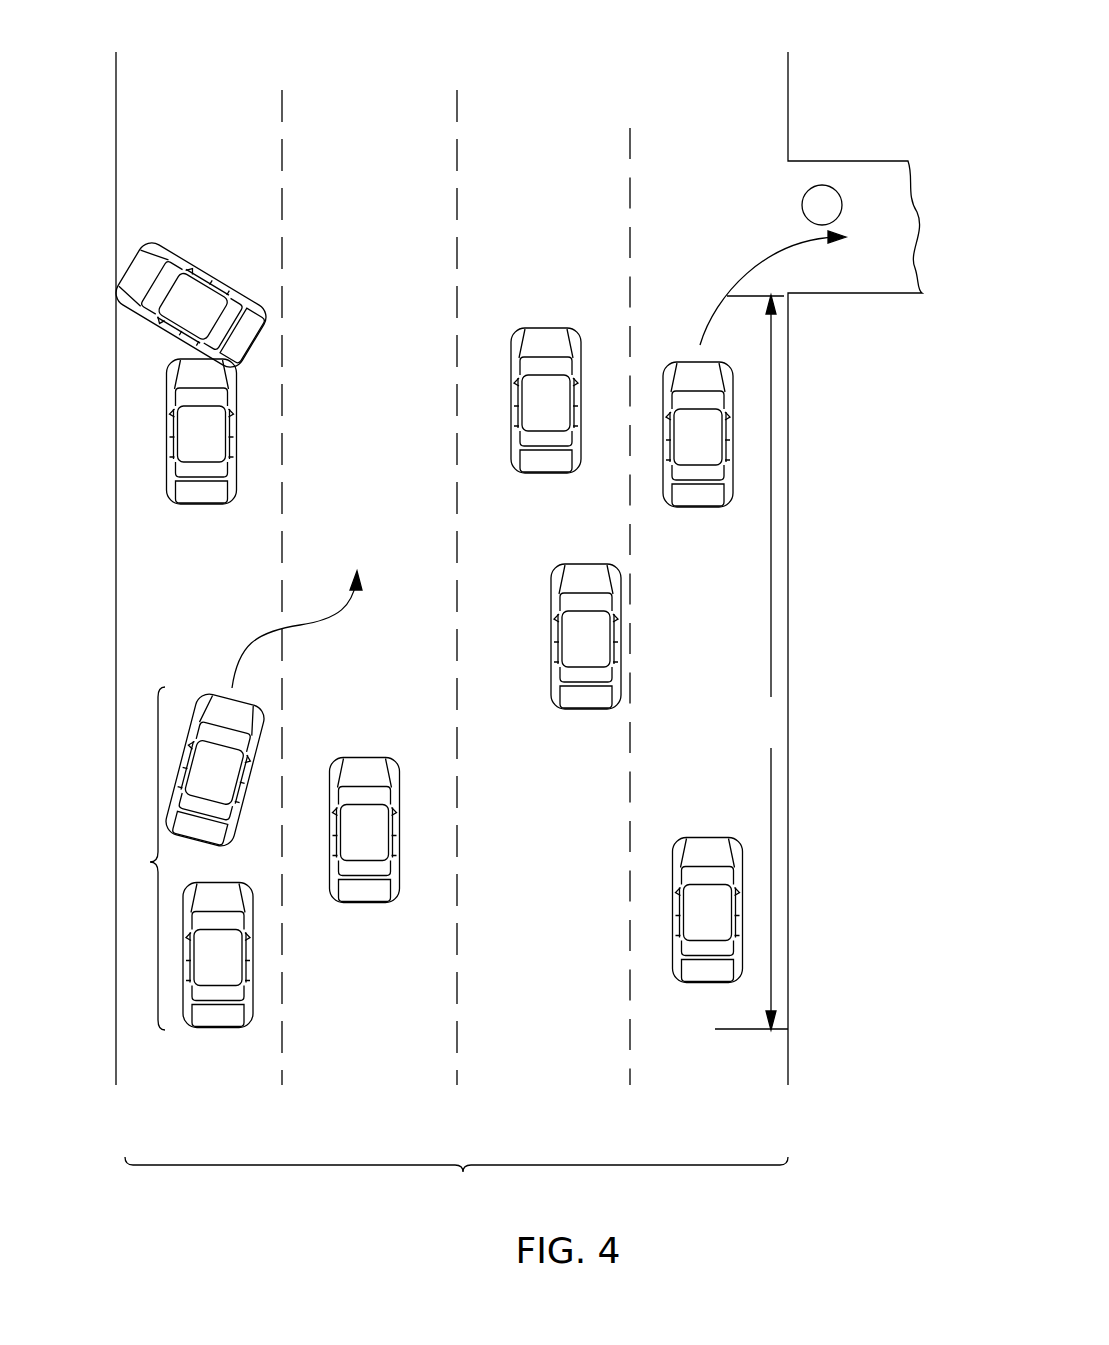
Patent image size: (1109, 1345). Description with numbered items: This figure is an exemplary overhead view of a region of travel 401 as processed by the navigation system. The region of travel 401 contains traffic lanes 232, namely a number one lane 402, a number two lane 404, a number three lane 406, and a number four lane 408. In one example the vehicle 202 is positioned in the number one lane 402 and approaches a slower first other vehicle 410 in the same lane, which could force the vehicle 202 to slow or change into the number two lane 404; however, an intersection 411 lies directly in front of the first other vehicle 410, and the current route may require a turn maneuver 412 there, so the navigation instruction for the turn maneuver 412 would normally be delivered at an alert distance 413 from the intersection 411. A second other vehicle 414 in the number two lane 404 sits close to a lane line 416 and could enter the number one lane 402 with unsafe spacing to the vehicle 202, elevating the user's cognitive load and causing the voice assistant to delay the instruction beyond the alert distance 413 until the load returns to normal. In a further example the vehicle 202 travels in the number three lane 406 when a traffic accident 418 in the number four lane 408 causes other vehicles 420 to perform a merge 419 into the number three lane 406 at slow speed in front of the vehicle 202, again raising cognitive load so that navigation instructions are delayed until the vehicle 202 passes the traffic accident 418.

The region of travel 401 is at (272, 68).
The vehicle 202 is at (367, 845).
The traffic lanes 232 is at (463, 1172).
The number 1 lane 402 is at (715, 1058).
The number 2 lane 404 is at (549, 1065).
The number 3 lane 406 is at (365, 1065).
The number 4 lane 408 is at (198, 1065).
The first other vehicle 410 is at (697, 457).
The intersection 411 is at (826, 204).
The turn maneuver 412 is at (738, 292).
The alert distance 413 is at (751, 662).
The second other vehicle 414 is at (586, 658).
The lane line 416 is at (632, 727).
The traffic accident 418 is at (200, 440).
The merge 419 is at (268, 637).
The other vehicles 420 is at (148, 862).